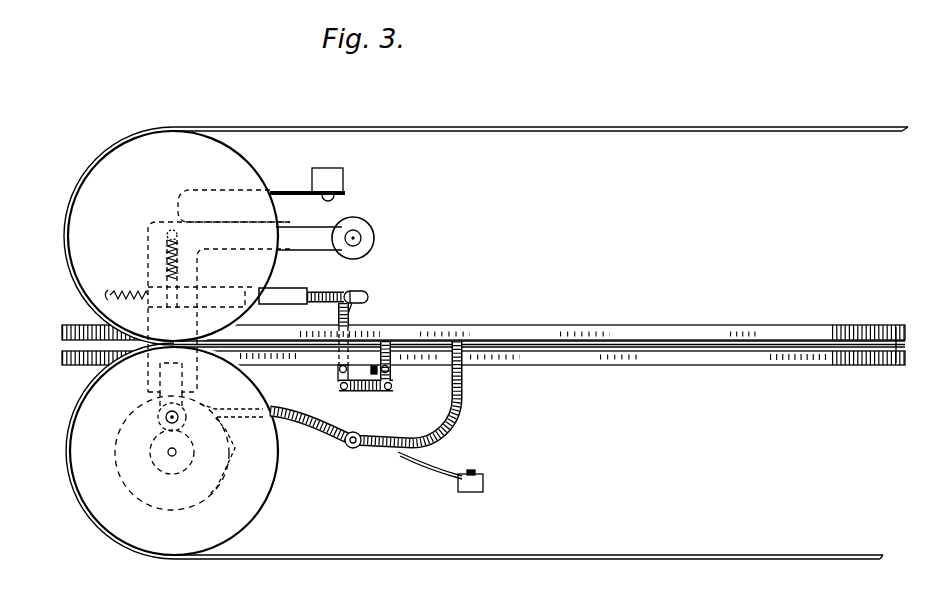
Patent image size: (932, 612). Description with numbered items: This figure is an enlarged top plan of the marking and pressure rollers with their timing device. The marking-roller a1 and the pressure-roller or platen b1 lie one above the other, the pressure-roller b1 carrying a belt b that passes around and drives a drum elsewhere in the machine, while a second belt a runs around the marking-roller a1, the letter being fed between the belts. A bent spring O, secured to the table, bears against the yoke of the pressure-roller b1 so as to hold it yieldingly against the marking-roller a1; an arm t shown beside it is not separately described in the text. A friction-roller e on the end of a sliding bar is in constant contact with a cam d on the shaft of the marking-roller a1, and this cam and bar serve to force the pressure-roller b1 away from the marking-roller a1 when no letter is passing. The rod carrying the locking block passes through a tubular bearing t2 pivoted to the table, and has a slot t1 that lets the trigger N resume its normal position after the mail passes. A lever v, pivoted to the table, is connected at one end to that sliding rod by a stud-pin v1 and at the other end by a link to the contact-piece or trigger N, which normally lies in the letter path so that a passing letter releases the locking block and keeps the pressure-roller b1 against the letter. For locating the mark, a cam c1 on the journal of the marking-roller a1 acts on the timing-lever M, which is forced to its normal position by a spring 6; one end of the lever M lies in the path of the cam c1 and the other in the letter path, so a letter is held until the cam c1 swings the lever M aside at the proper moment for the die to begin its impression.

The belt b is at (434, 132).
The pressure-roller b1 is at (173, 236).
The lower belt a is at (378, 555).
The marking-roller a1 is at (174, 451).
The bent spring O is at (277, 197).
The lever t is at (296, 231).
The slot t1 is at (366, 297).
The tubular bearing t2 is at (288, 294).
The lever v is at (349, 324).
The stud-pin v1 is at (350, 291).
The trigger N is at (388, 342).
The timing-lever M is at (463, 401).
The spring 6 is at (440, 470).
The cam d is at (172, 453).
The friction-roller e is at (181, 421).
The cam c1 is at (237, 450).